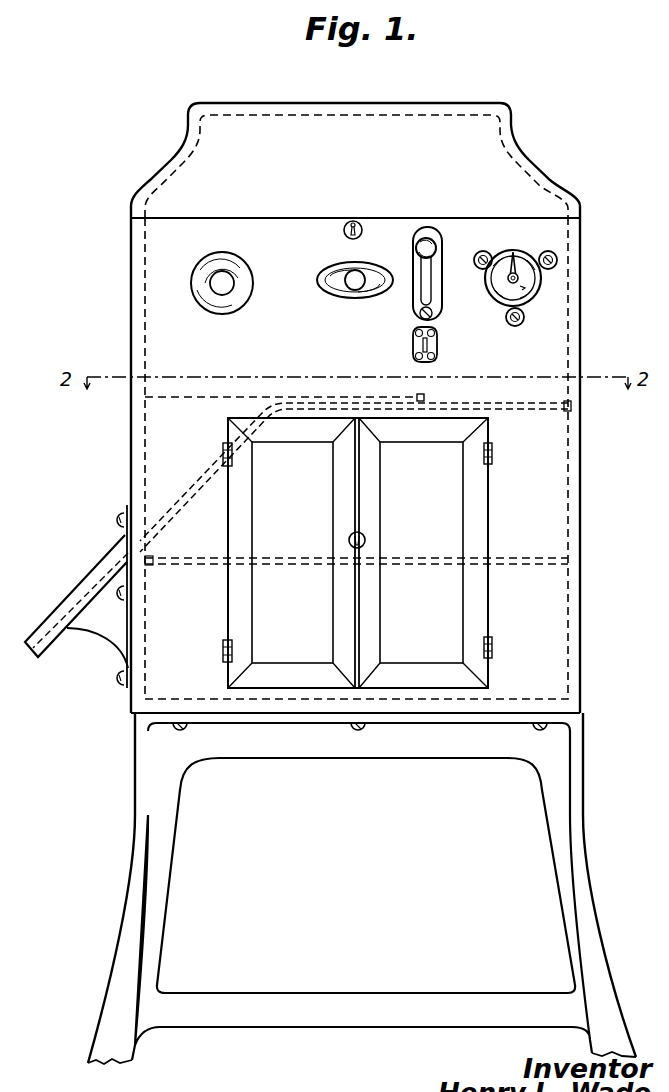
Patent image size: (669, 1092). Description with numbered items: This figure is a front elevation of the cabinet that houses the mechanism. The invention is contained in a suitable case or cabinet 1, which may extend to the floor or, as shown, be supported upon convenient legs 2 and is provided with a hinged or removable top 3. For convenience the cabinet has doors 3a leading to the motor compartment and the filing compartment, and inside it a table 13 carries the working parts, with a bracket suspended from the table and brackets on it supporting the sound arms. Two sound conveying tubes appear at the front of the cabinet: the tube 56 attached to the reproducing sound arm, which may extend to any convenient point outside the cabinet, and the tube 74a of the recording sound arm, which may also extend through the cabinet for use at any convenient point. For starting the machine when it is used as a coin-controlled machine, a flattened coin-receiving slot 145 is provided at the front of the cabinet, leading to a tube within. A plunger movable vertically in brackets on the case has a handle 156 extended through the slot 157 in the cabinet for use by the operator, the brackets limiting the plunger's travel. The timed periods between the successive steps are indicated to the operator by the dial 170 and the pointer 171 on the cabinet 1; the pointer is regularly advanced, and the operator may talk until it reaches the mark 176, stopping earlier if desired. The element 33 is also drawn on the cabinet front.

The case or cabinet 1 is at (553, 600).
The legs 2 is at (134, 872).
The hinged or removable top 3 is at (502, 143).
The doors 3a is at (451, 508).
The table 13 is at (515, 410).
The arm 33 is at (82, 594).
The sound conveying tube 56 is at (232, 295).
The sound conveying tube 74a is at (352, 298).
The coin-receiving slot 145 is at (414, 346).
The handle 156 is at (432, 243).
The slot 157 is at (428, 287).
The dial 170 is at (518, 281).
The pointer 171 is at (516, 254).
The mark 176 is at (497, 302).